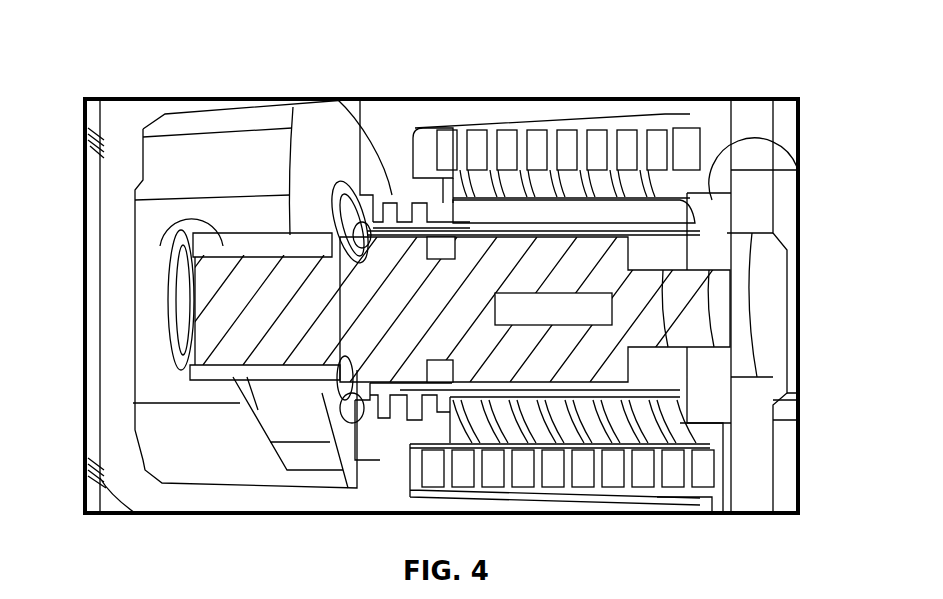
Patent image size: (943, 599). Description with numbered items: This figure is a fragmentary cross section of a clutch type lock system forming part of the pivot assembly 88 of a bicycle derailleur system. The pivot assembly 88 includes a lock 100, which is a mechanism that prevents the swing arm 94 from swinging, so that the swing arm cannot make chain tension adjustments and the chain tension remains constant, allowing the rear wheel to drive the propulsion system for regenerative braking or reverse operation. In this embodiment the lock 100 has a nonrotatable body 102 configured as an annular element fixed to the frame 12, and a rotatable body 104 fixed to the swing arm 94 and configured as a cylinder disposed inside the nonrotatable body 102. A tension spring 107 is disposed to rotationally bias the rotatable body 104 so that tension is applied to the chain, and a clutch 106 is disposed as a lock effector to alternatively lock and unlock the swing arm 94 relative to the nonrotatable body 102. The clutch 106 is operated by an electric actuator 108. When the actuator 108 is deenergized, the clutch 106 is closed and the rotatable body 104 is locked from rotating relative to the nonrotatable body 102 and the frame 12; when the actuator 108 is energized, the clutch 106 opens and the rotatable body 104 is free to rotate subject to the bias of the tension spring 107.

The pivot assembly 88 is at (204, 38).
The frame 12 is at (440, 115).
The swing arm 94 is at (748, 472).
The lock 100 is at (307, 441).
The nonrotatable body 102 is at (344, 112).
The rotatable body 104 is at (367, 295).
The clutch 106 is at (418, 205).
The tension spring 107 is at (627, 180).
The electric actuator 108 is at (190, 298).